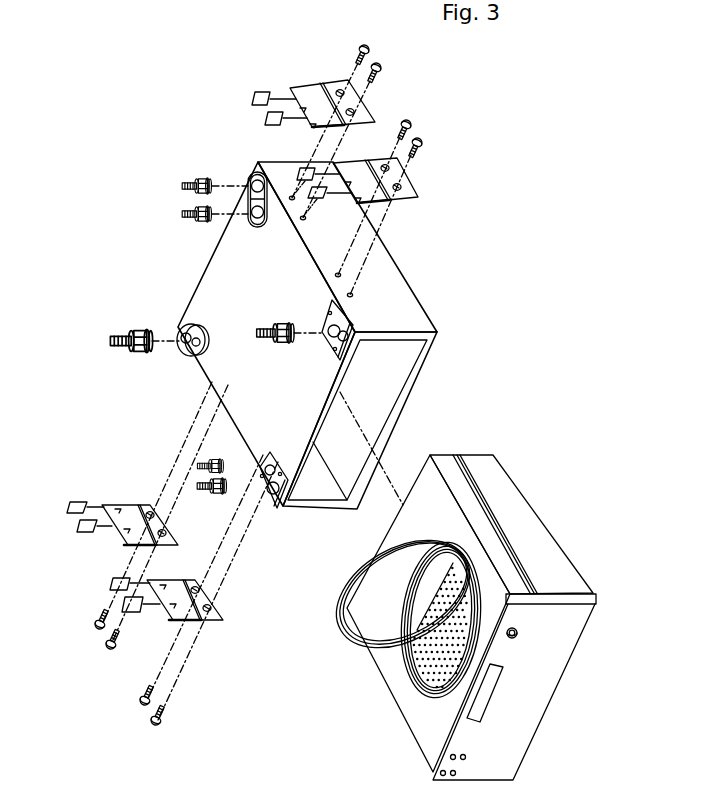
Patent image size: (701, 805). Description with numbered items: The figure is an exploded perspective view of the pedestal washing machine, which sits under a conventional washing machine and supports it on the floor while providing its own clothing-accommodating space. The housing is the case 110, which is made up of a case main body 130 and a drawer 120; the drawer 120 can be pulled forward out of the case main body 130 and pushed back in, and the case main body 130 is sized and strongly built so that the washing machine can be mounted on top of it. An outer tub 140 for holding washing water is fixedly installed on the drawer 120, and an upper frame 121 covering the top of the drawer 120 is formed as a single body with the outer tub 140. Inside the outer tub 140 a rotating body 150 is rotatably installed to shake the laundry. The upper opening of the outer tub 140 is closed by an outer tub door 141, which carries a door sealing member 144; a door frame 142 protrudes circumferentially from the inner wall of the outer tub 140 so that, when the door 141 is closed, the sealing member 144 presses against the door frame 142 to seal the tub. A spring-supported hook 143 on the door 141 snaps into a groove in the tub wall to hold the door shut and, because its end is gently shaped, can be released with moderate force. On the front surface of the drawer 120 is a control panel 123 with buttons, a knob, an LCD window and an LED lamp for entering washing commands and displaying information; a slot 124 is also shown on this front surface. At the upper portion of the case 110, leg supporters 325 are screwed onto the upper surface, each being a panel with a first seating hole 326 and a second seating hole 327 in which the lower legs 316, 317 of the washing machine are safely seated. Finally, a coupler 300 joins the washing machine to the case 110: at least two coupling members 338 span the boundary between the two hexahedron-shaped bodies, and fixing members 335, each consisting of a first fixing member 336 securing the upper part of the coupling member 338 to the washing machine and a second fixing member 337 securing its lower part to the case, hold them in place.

The case 110 is at (533, 415).
The drawer 120 is at (513, 607).
The upper frame 121 is at (433, 730).
The control panel 123 is at (514, 646).
The slot 124 is at (500, 690).
The case main body 130 is at (424, 290).
The outer tub 140 is at (410, 656).
The outer tub door 141 is at (363, 633).
The door frame 142 is at (421, 668).
The hook 143 is at (337, 590).
The door sealing member 144 is at (343, 623).
The rotating body 150 is at (440, 602).
The coupler 300 is at (90, 557).
The lower leg 316 is at (206, 498).
The lower leg 317 is at (197, 465).
The leg supporter 325 is at (172, 325).
The first seating hole 326 is at (183, 347).
The second seating hole 327 is at (197, 326).
The fixing member 335 is at (93, 722).
The first fixing member 336 is at (139, 628).
The second fixing member 337 is at (108, 656).
The coupling member 338 is at (128, 503).